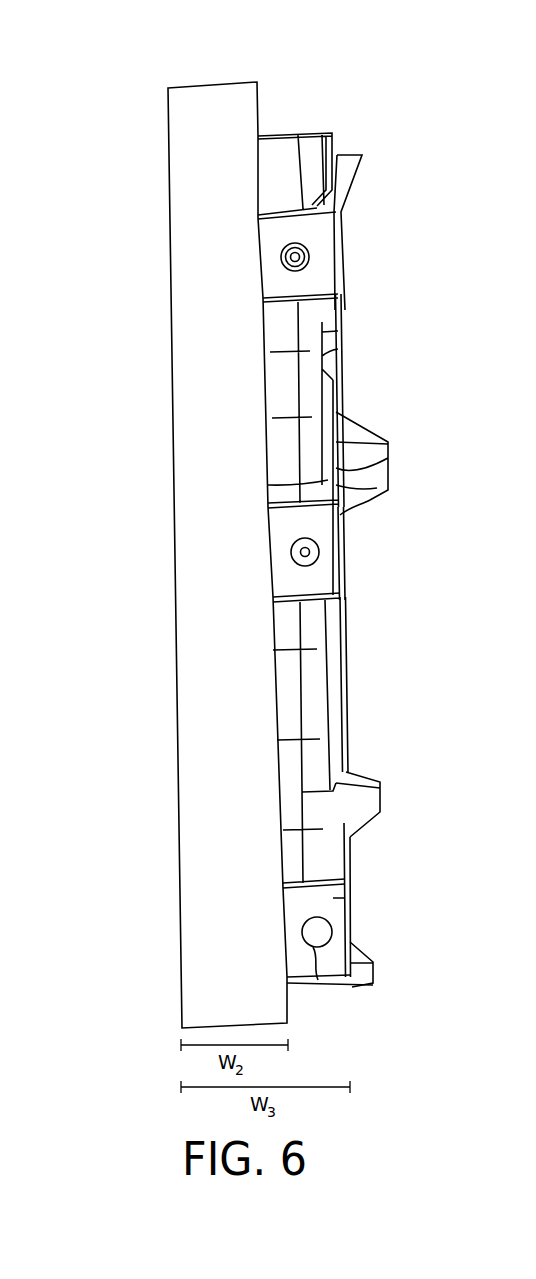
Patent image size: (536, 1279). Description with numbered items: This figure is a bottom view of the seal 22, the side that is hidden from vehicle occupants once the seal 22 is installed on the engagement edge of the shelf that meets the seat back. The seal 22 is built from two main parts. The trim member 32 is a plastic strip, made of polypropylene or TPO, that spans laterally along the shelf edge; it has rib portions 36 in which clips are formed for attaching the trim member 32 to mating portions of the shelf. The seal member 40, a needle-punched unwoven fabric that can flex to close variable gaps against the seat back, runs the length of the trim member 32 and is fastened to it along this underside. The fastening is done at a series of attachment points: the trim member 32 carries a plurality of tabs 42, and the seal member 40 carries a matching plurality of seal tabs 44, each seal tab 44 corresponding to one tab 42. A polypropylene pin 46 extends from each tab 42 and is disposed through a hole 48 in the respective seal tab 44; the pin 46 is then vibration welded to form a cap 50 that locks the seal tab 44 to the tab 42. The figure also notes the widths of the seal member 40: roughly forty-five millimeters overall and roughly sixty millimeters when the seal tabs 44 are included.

The seal 22 is at (112, 488).
The seal member 40 is at (212, 97).
The tab 42 is at (340, 220).
The trim member 32 is at (340, 348).
The rib portion 36 is at (370, 445).
The seal tab 44 is at (322, 575).
The pin 46 is at (311, 257).
The hole 48 is at (306, 247).
The cap 50 is at (330, 984).